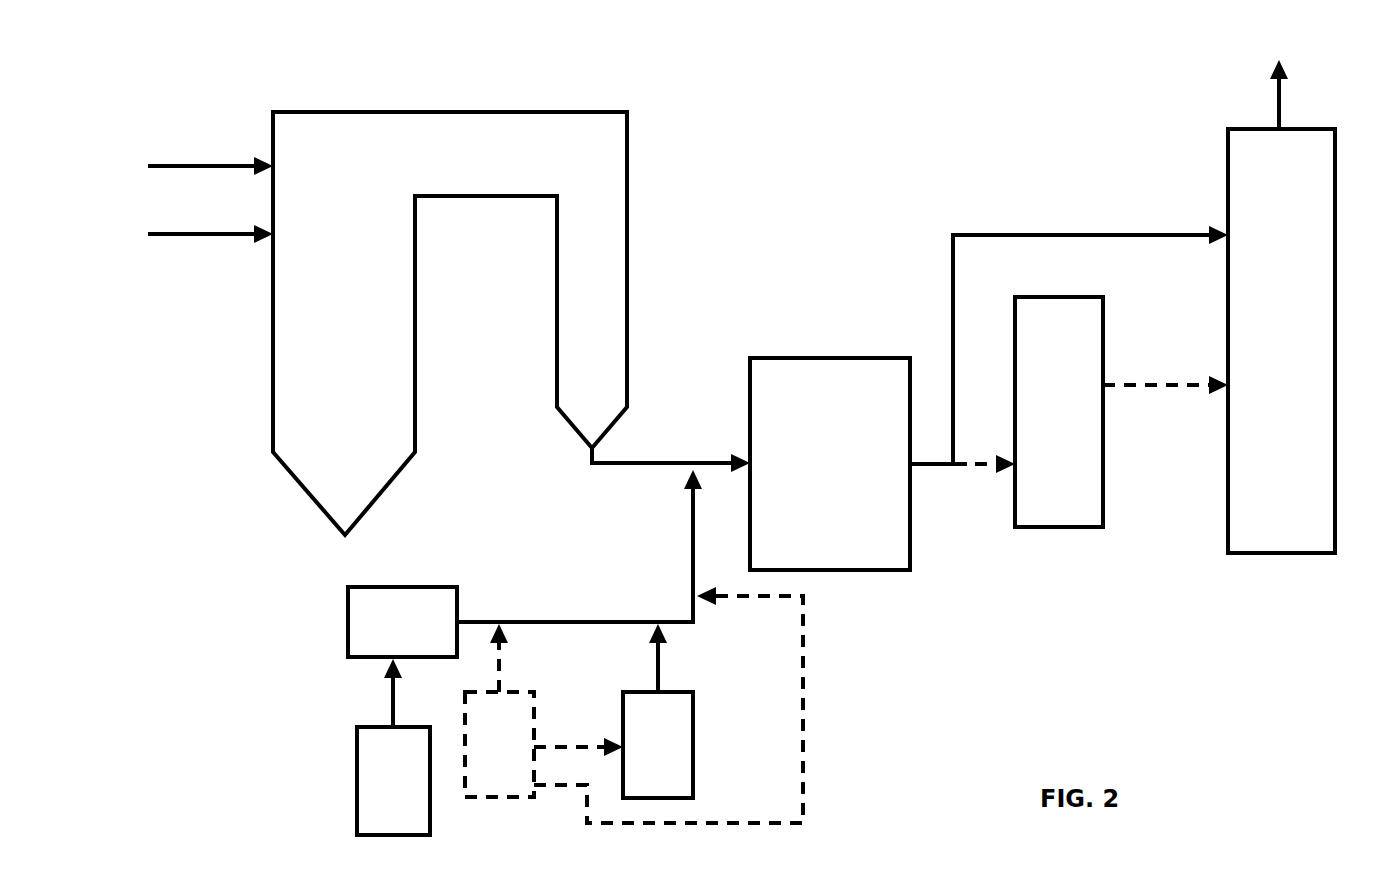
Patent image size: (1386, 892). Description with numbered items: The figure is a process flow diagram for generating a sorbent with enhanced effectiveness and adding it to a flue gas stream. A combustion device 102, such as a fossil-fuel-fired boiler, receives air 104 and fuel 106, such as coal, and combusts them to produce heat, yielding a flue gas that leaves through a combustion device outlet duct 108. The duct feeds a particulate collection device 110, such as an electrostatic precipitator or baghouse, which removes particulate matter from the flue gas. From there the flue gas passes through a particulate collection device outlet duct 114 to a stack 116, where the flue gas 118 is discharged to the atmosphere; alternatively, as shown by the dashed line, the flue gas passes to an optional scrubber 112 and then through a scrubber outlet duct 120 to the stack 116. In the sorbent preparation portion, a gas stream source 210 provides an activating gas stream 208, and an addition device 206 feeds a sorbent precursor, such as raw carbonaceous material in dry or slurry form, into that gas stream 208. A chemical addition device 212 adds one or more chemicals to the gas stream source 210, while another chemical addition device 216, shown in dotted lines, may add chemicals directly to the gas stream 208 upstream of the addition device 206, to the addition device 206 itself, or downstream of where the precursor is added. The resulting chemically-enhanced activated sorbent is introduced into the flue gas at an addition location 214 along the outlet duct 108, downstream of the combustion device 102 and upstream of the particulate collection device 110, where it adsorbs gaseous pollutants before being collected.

The combustion device 102 is at (450, 112).
The air 104 is at (230, 162).
The fuel 106 is at (230, 238).
The combustion device outlet duct 108 is at (631, 463).
The particulate collection device 110 is at (803, 358).
The scrubber 112 is at (1022, 527).
The particulate collection device outlet duct 114 is at (1068, 235).
The stack 116 is at (1228, 165).
The flue gas 118 is at (1279, 112).
The scrubber outlet duct 120 is at (1128, 385).
The addition device 206 is at (693, 790).
The gas stream 208 is at (600, 622).
The gas stream source 210 is at (348, 635).
The chemical addition device 212 is at (357, 815).
The addition location 214 is at (689, 478).
The chemical addition device 216 is at (466, 800).